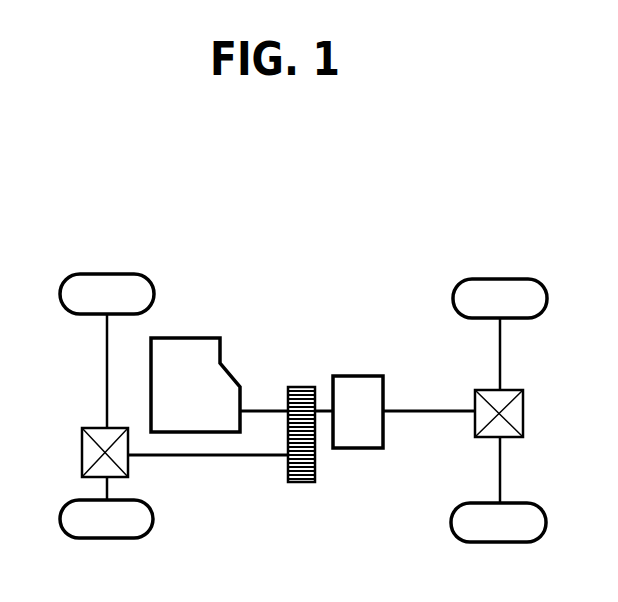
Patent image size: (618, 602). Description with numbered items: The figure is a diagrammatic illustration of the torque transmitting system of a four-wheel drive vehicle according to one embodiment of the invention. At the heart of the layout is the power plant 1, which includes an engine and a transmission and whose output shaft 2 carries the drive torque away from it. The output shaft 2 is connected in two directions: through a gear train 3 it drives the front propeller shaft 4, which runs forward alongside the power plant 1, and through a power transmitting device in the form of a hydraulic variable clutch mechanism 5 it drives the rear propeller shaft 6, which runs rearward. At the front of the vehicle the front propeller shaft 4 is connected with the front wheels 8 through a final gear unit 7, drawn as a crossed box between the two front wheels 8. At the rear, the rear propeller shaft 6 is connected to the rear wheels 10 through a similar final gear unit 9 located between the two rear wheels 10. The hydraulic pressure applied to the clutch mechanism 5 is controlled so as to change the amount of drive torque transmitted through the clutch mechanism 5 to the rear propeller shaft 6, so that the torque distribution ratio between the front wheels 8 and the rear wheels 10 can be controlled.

The power plant 1 is at (193, 345).
The output shaft 2 is at (262, 409).
The gear train 3 is at (316, 464).
The front propeller shaft 4 is at (218, 457).
The hydraulic variable clutch mechanism 5 is at (364, 449).
The rear propeller shaft 6 is at (422, 409).
The final gear unit 7 is at (81, 451).
The front wheels 8 is at (60, 295).
The final gear unit 9 is at (523, 413).
The rear wheels 10 is at (547, 301).